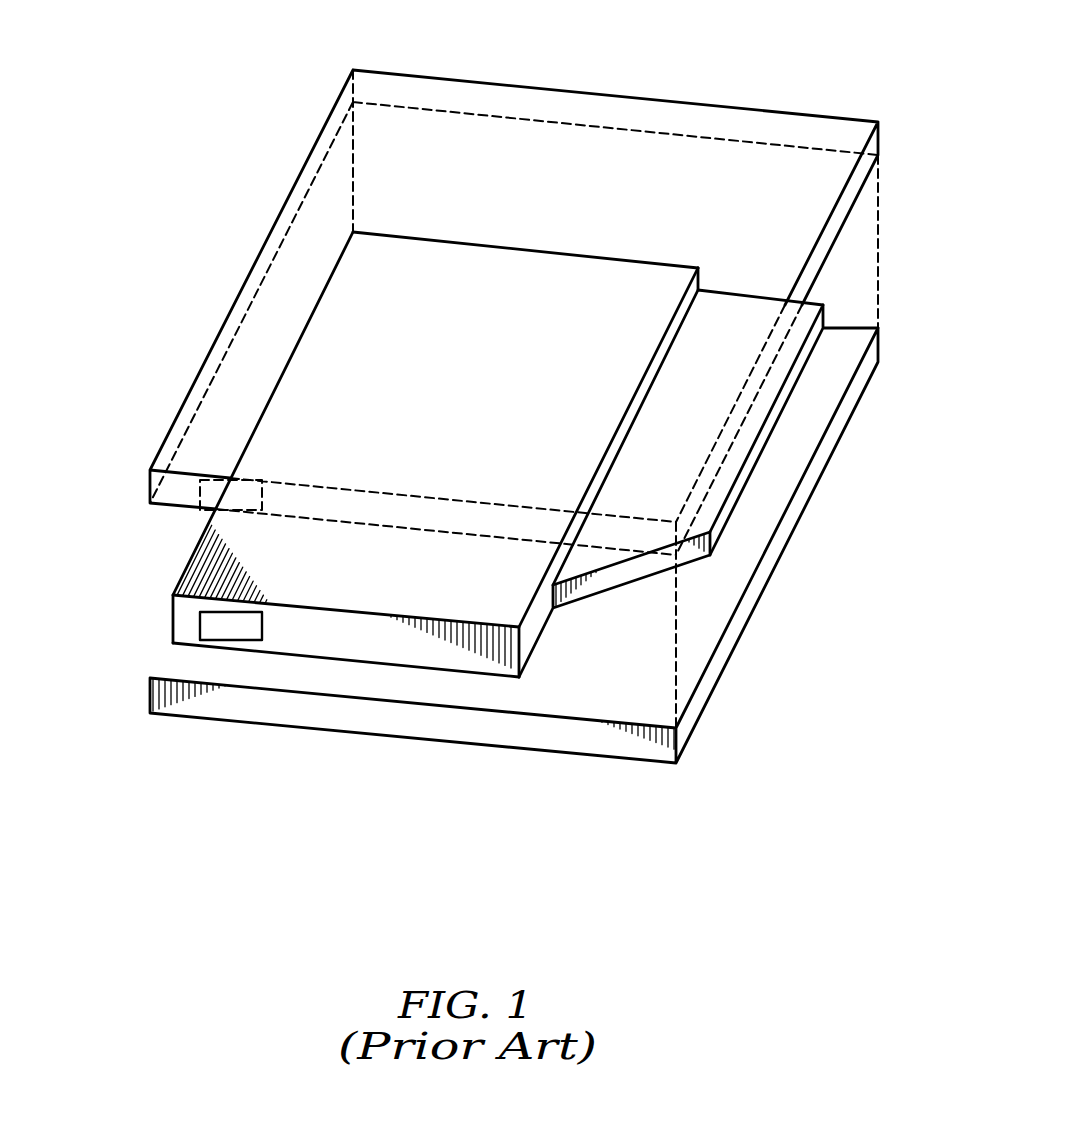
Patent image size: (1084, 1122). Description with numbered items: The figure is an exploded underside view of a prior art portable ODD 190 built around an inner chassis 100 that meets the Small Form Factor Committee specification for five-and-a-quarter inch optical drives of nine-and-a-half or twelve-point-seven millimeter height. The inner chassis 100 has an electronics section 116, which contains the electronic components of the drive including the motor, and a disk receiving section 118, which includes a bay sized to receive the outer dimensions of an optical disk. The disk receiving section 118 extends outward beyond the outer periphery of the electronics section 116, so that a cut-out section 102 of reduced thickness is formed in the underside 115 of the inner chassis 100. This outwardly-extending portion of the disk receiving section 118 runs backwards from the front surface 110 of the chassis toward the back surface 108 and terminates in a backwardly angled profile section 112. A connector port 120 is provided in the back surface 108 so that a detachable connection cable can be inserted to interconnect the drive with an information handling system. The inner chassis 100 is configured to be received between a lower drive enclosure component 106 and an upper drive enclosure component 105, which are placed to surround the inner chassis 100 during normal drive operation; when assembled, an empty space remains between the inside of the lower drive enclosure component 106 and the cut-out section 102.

The portable ODD 190 is at (138, 122).
The lower drive enclosure component 106 is at (715, 105).
The front surface 110 is at (485, 245).
The underside 115 is at (350, 330).
The inner chassis 100 is at (227, 563).
The back surface 108 is at (345, 643).
The connector port 120 is at (233, 627).
The electronics section 116 is at (653, 390).
The disk receiving section 118 is at (790, 400).
The cut-out section 102 is at (675, 470).
The backwardly angled profile section 112 is at (603, 582).
The upper drive enclosure component 105 is at (693, 720).